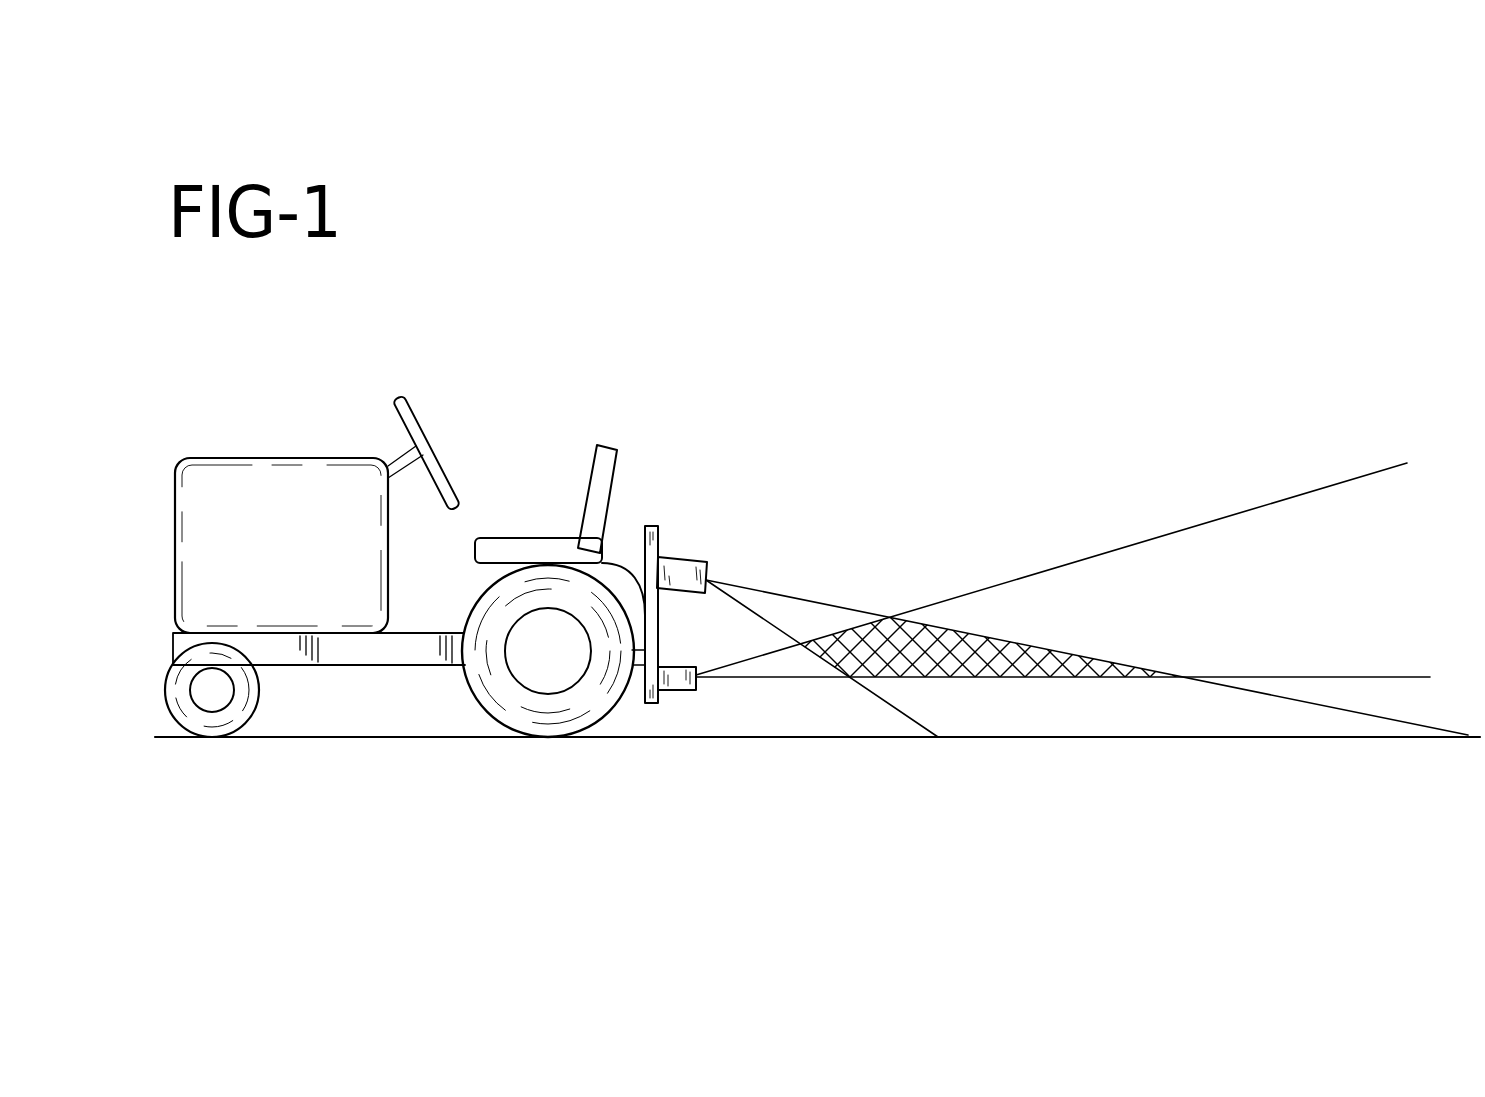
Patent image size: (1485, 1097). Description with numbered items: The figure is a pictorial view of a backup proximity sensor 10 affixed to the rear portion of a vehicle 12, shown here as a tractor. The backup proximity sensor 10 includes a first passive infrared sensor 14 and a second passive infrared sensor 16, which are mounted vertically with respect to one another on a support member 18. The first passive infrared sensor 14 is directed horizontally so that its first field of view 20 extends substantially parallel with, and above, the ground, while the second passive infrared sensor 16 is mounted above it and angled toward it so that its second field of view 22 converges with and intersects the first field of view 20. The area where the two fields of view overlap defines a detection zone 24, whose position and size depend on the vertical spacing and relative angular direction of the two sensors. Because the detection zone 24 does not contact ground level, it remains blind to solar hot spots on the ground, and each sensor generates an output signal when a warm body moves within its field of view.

The backup proximity sensor 10 is at (695, 535).
The vehicle 12 is at (274, 436).
The first passive infrared sensor 14 is at (680, 690).
The second passive infrared sensor 16 is at (686, 566).
The support member 18 is at (659, 527).
The first field of view 20 is at (787, 678).
The second field of view 22 is at (785, 593).
The detection zone 24 is at (990, 652).